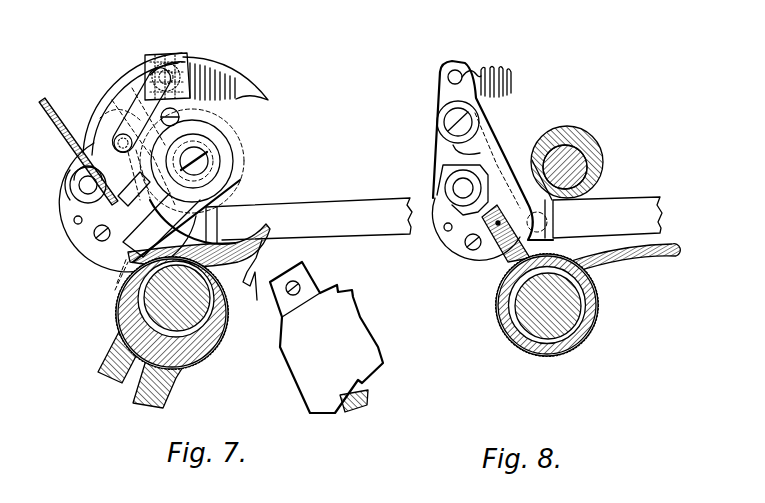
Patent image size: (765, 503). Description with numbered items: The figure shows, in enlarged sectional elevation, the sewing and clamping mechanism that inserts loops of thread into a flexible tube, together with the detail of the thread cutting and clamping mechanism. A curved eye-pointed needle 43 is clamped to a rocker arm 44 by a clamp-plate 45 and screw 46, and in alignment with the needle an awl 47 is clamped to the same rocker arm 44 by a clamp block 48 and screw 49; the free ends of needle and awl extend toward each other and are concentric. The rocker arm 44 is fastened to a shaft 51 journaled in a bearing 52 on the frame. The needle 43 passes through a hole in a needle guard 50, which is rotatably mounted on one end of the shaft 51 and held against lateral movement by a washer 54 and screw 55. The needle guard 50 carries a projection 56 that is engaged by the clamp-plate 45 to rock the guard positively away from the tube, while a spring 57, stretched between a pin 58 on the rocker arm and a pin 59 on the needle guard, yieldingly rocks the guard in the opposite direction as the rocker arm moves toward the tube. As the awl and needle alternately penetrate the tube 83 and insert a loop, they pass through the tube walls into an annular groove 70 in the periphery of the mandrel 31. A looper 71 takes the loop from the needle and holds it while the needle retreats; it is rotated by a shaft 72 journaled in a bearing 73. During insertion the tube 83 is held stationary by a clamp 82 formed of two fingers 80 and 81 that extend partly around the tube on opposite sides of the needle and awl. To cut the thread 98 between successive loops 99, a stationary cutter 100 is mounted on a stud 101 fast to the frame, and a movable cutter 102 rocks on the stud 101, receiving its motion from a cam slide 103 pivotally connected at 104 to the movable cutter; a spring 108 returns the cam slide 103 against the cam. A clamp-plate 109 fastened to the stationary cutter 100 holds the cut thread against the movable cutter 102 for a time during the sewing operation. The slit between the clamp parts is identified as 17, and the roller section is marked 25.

In FIG. 7, the slit 17 is at (138, 395).
In FIG. 8, the slit 17 is at (600, 310).
In FIG. 7, the roller 25 is at (167, 317).
In FIG. 8, the roller 25 is at (556, 322).
In FIG. 7, the mandrel 31 is at (167, 317).
In FIG. 8, the mandrel 31 is at (556, 322).
In FIG. 7, the curved eye-pointed needle 43 is at (218, 256).
In FIG. 7, the rocker arm 44 is at (100, 166).
In FIG. 7, the clamp-plate 45 is at (107, 218).
In FIG. 7, the screw 46 is at (134, 187).
In FIG. 7, the awl 47 is at (232, 78).
In FIG. 7, the clamp block 48 is at (186, 54).
In FIG. 7, the screw 49 is at (160, 67).
In FIG. 7, the needle guard 50 is at (161, 225).
In FIG. 7, the shaft 51 is at (218, 147).
In FIG. 8, the shaft 51 is at (575, 170).
In FIG. 8, the bearing 52 is at (582, 140).
In FIG. 7, the washer 54 is at (212, 162).
In FIG. 7, the screw 55 is at (207, 175).
In FIG. 7, the projection 56 is at (150, 88).
In FIG. 7, the spring 57 is at (122, 107).
In FIG. 7, the pin 58 is at (115, 140).
In FIG. 7, the pin 59 is at (180, 115).
In FIG. 7, the annular groove 70 is at (130, 340).
In FIG. 7, the looper 71 is at (255, 286).
In FIG. 7, the shaft 72 is at (363, 397).
In FIG. 7, the bearing 73 is at (353, 330).
In FIG. 7, the clamp finger 80 is at (118, 372).
In FIG. 7, the clamp finger 81 is at (163, 398).
In FIG. 7, the clamp 82 is at (183, 360).
In FIG. 7, the tube 83 is at (205, 350).
In FIG. 8, the tube 83 is at (556, 322).
In FIG. 7, the thread 98 is at (56, 126).
In FIG. 8, the thread 98 is at (513, 260).
In FIG. 7, the loops 99 is at (253, 247).
In FIG. 8, the loops 99 is at (670, 257).
In FIG. 7, the stationary cutter 100 is at (70, 223).
In FIG. 8, the stationary cutter 100 is at (490, 222).
In FIG. 7, the stud 101 is at (80, 190).
In FIG. 8, the stud 101 is at (462, 187).
In FIG. 7, the movable cutter 102 is at (125, 285).
In FIG. 8, the movable cutter 102 is at (436, 98).
In FIG. 8, the cam slide 103 is at (650, 205).
In FIG. 7, the pivotal connection 104 is at (110, 120).
In FIG. 8, the pivotal connection 104 is at (470, 121).
In FIG. 7, the spring 108 is at (228, 70).
In FIG. 8, the spring 108 is at (512, 83).
In FIG. 7, the clamp-plate 109 is at (100, 241).
In FIG. 8, the clamp-plate 109 is at (467, 255).